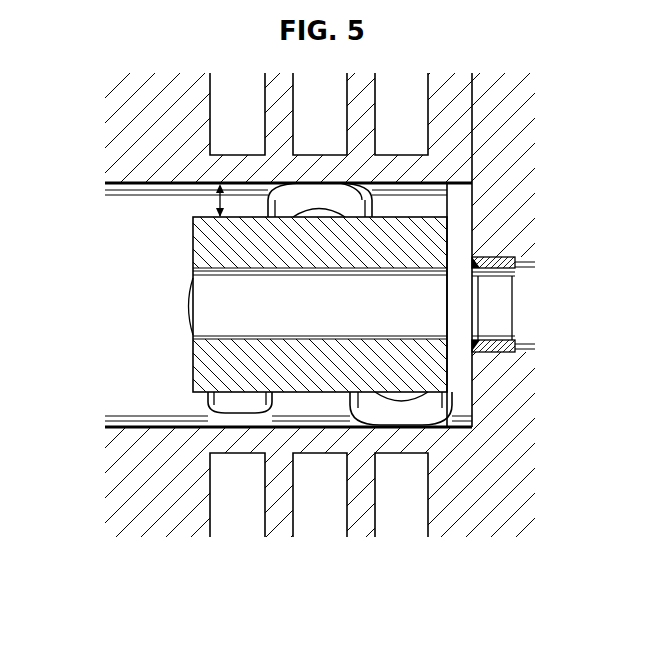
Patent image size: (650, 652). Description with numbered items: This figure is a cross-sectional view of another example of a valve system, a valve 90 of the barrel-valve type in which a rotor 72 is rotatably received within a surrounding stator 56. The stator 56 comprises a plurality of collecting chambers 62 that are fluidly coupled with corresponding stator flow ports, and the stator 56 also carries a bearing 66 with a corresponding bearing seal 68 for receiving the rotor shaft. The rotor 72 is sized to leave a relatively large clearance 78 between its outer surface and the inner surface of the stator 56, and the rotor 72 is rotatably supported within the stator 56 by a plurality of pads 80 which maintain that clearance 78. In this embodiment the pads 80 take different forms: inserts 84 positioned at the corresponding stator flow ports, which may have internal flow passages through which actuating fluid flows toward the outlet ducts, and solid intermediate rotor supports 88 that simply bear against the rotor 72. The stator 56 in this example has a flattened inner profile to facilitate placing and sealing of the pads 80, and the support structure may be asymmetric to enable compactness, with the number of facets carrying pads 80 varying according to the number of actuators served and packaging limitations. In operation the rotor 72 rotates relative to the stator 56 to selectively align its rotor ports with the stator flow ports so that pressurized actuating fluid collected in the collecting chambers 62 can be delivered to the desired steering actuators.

The valve 90 is at (82, 131).
The stator 56 is at (141, 132).
The collecting chambers 62 is at (396, 522).
The bearing 66 is at (505, 354).
The bearing seal 68 is at (480, 257).
The rotor 72 is at (306, 252).
The clearance 78 is at (215, 203).
The pads 80 is at (378, 186).
The inserts 84 is at (323, 200).
The intermediate rotor supports 88 is at (237, 398).